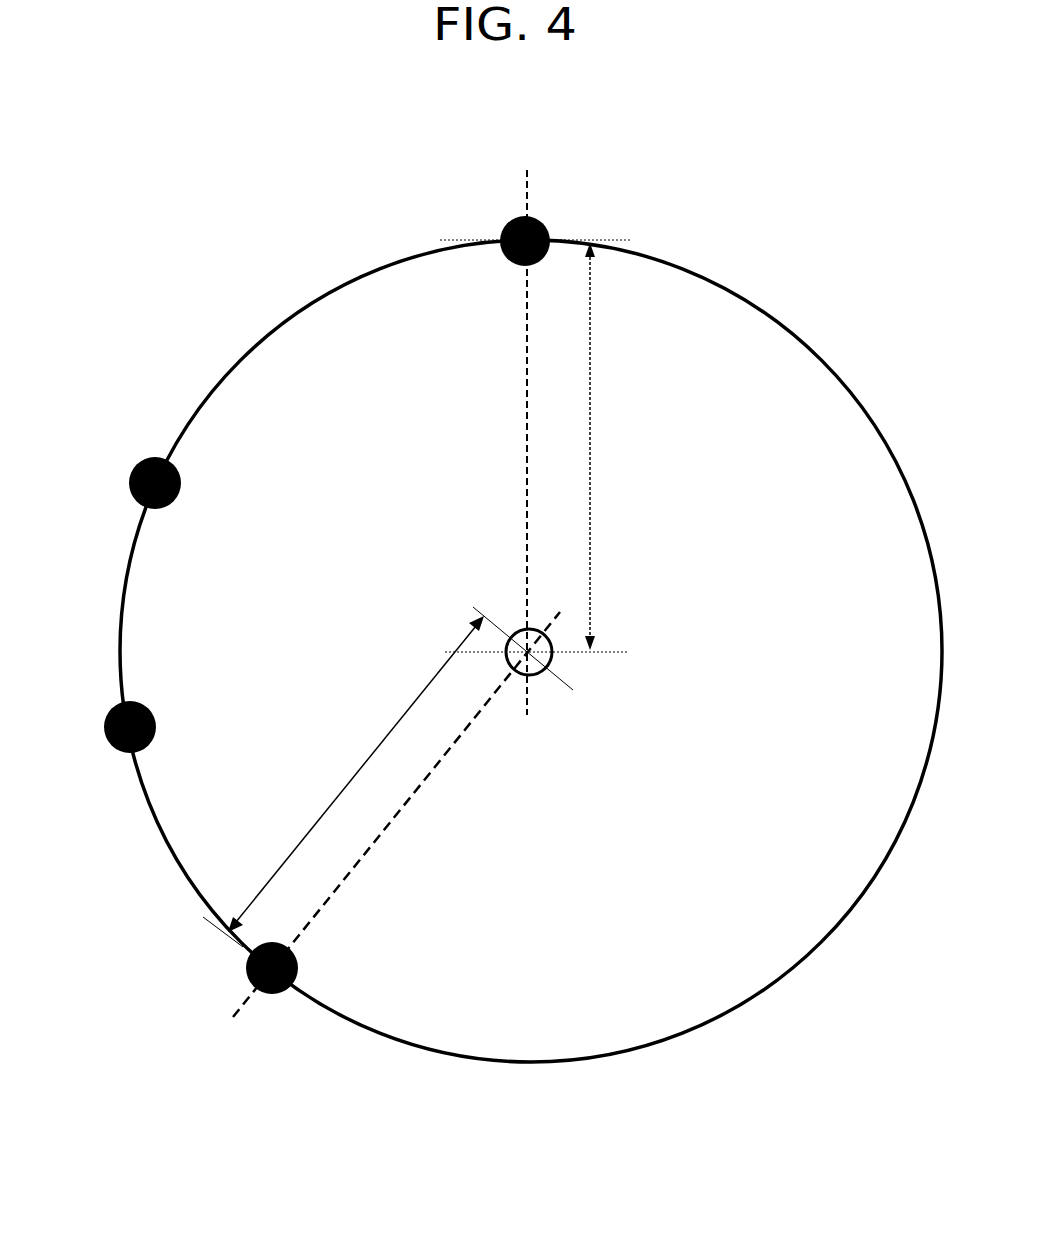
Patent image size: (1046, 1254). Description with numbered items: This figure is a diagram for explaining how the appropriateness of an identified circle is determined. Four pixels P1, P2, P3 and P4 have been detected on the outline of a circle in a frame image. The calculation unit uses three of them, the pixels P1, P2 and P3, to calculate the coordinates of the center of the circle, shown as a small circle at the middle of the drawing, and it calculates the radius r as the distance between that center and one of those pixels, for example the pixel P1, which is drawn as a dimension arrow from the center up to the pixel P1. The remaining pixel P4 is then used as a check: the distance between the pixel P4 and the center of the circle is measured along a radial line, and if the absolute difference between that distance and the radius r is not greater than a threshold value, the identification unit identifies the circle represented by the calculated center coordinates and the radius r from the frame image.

The pixel P1 is at (507, 231).
The pixel P2 is at (135, 467).
The pixel P3 is at (104, 727).
The pixel P4 is at (396, 829).
The radius r is at (606, 446).